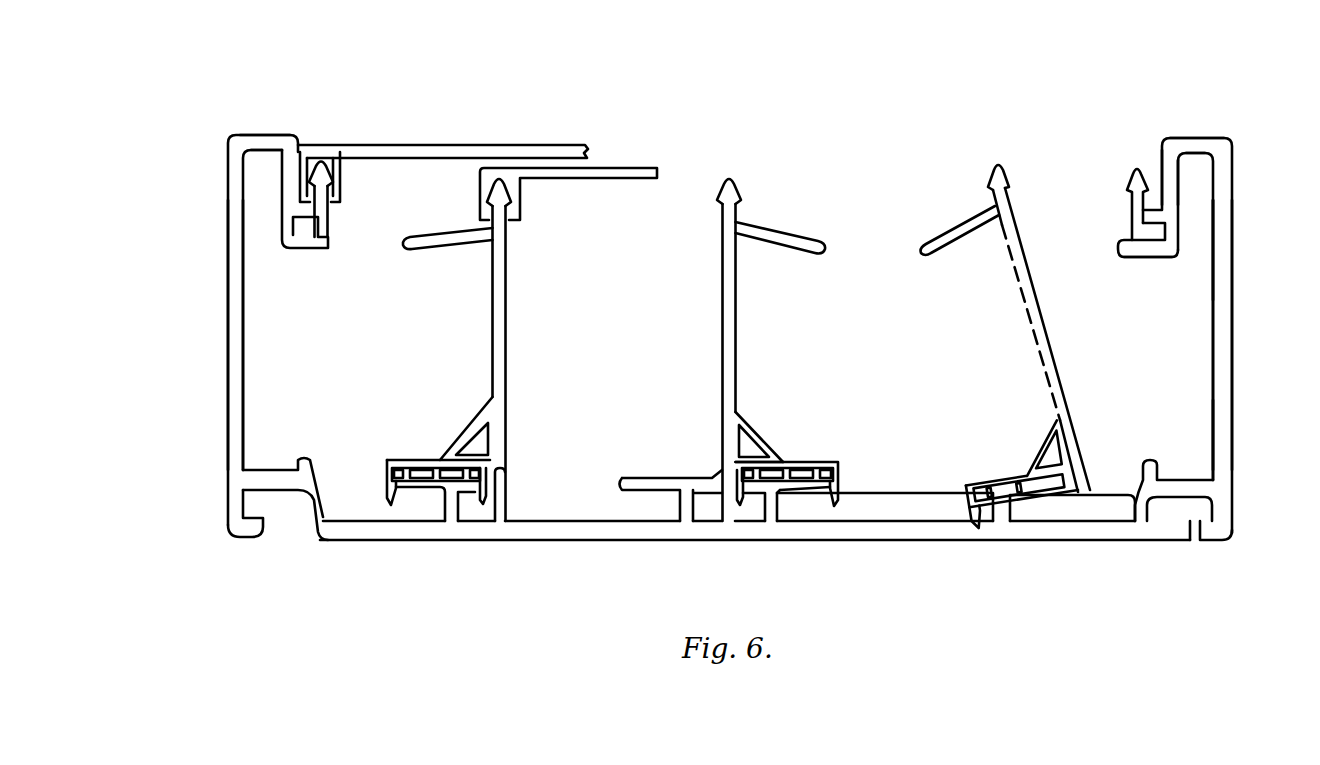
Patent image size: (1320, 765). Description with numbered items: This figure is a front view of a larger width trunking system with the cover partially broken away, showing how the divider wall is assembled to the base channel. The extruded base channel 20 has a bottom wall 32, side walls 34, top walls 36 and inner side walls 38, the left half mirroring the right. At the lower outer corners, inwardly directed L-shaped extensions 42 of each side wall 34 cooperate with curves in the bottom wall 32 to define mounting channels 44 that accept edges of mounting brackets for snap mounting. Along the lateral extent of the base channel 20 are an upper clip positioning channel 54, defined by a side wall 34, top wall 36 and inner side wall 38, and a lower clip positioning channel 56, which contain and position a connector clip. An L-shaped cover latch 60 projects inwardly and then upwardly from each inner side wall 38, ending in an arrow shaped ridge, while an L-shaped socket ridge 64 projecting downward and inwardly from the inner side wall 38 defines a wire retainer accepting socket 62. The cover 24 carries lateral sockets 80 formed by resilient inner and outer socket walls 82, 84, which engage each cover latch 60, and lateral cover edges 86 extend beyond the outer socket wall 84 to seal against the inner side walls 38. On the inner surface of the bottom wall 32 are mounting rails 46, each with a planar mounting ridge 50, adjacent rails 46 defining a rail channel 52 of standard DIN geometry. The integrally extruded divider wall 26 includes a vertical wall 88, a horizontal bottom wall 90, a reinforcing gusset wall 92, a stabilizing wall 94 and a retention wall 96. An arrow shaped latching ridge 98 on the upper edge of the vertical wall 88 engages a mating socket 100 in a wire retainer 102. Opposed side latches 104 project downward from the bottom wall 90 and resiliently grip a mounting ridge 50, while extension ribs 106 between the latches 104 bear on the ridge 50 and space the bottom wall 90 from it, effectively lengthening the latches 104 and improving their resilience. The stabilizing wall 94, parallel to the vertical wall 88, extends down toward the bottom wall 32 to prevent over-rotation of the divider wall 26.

The base channel 20 is at (1226, 138).
The cover 24 is at (373, 143).
The divider wall 26 is at (505, 297).
The bottom wall 32 is at (612, 537).
The side walls 34 is at (1235, 355).
The top walls 36 is at (1181, 138).
The inner side walls 38 is at (1156, 140).
The L-shaped extensions 42 is at (245, 538).
The mounting channels 44 is at (1182, 510).
The mounting rails 46 is at (442, 507).
The mounting ridge 50 is at (800, 487).
The rail channel 52 is at (752, 512).
The upper clip positioning channel 54 is at (1193, 193).
The lower clip positioning channel 56 is at (1192, 463).
The cover latch 60 is at (1134, 165).
The wire retainer accepting socket 62 is at (1140, 233).
The socket ridge 64 is at (1147, 257).
The lateral sockets 80 is at (335, 200).
The inner socket wall 82 is at (338, 178).
The outer socket wall 84 is at (307, 183).
The lateral cover edges 86 is at (303, 143).
The vertical wall 88 is at (737, 297).
The horizontal bottom wall 90 is at (808, 463).
The reinforcing gusset wall 92 is at (753, 433).
The stabilizing wall 94 is at (702, 490).
The retention wall 96 is at (800, 230).
The latching ridge 98 is at (731, 176).
The mating socket 100 is at (500, 175).
The wire retainer 102 is at (622, 168).
The side latches 104 is at (838, 487).
The extension ribs 106 is at (1020, 465).